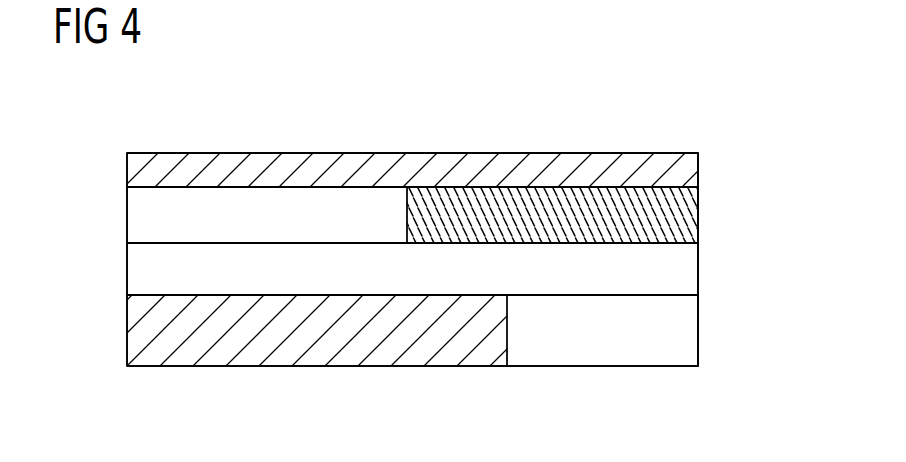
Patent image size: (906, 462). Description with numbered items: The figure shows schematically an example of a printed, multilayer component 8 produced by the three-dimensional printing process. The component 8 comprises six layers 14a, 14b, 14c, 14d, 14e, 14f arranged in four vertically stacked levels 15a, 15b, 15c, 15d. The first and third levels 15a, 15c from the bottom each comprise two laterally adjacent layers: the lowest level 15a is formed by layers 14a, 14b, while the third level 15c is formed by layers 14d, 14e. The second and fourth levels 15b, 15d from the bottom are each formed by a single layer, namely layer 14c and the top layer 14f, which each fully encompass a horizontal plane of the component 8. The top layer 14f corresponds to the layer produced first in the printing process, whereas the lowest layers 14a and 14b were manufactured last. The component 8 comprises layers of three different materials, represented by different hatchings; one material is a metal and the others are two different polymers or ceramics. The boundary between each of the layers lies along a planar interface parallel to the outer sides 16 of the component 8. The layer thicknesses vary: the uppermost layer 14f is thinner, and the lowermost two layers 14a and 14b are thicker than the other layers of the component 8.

The multilayer component 8 is at (148, 143).
The layer 14a is at (563, 355).
The layer 14b is at (333, 352).
The layer 14c is at (218, 283).
The layer 14d is at (603, 198).
The layer 14e is at (315, 202).
The top layer 14f is at (221, 166).
The level 15a is at (708, 297).
The level 15b is at (708, 245).
The level 15c is at (708, 188).
The level 15d is at (718, 154).
The outer sides 16 is at (452, 150).